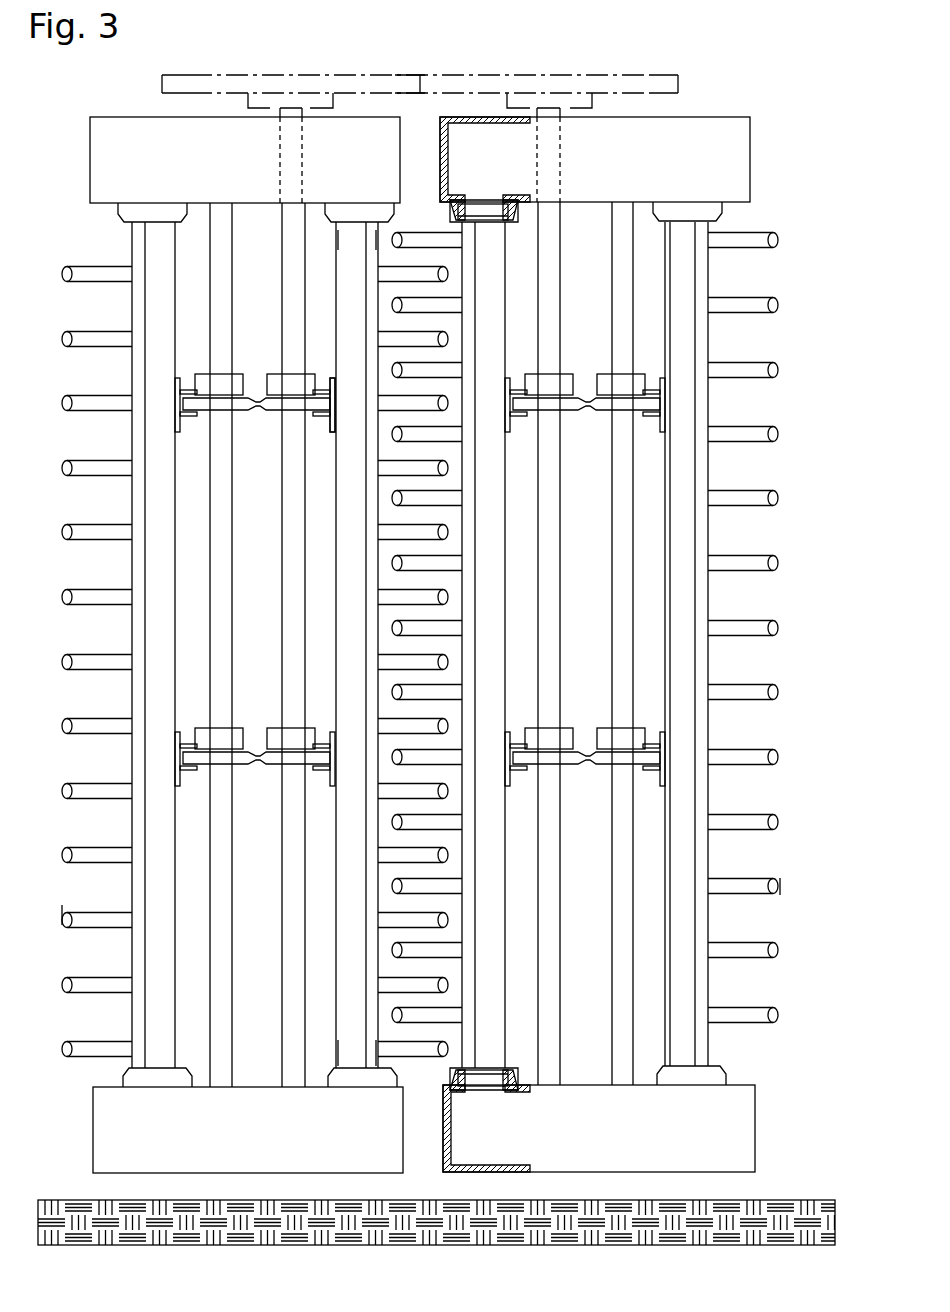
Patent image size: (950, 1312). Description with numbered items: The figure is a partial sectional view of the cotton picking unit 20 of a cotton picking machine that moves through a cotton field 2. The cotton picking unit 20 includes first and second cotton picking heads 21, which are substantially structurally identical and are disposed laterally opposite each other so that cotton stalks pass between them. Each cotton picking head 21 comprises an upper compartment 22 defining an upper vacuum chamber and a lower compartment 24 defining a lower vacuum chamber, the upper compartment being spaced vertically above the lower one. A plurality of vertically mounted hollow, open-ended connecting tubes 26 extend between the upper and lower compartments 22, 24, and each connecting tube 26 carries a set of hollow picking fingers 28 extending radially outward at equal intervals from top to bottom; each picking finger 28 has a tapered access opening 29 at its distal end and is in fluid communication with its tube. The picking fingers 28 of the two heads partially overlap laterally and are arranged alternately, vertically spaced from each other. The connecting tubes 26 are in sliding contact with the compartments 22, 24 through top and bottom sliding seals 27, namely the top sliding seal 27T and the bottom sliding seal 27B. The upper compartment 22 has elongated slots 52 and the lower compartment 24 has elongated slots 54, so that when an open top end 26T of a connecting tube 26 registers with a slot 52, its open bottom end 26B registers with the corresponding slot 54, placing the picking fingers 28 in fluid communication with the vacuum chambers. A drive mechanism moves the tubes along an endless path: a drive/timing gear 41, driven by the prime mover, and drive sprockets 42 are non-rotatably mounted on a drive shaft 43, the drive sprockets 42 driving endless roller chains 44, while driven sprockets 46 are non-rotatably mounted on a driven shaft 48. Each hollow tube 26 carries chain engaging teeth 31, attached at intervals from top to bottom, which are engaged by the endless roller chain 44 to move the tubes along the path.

The cotton field 2 is at (794, 1198).
The cotton picking unit 20 is at (783, 108).
The cotton picking head 21 is at (40, 346).
The upper compartment 22 is at (90, 158).
The lower compartment 24 is at (93, 1128).
The connecting tube 26 is at (292, 348).
The open top end 26T is at (352, 232).
The open bottom end 26B is at (356, 1052).
The sliding seal 27 is at (442, 674).
The top sliding seal 27T is at (516, 222).
The bottom sliding seal 27B is at (512, 1072).
The picking finger 28 is at (100, 786).
The access opening 29 is at (64, 914).
The chain engaging teeth 31 is at (326, 426).
The drive/timing gear 41 is at (188, 74).
The drive sprocket 42 is at (262, 408).
The drive shaft 43 is at (292, 596).
The endless roller chain 44 is at (338, 410).
The driven sprocket 46 is at (200, 412).
The driven shaft 48 is at (226, 932).
The elongated slot 52 is at (494, 198).
The elongated slot 54 is at (496, 1088).